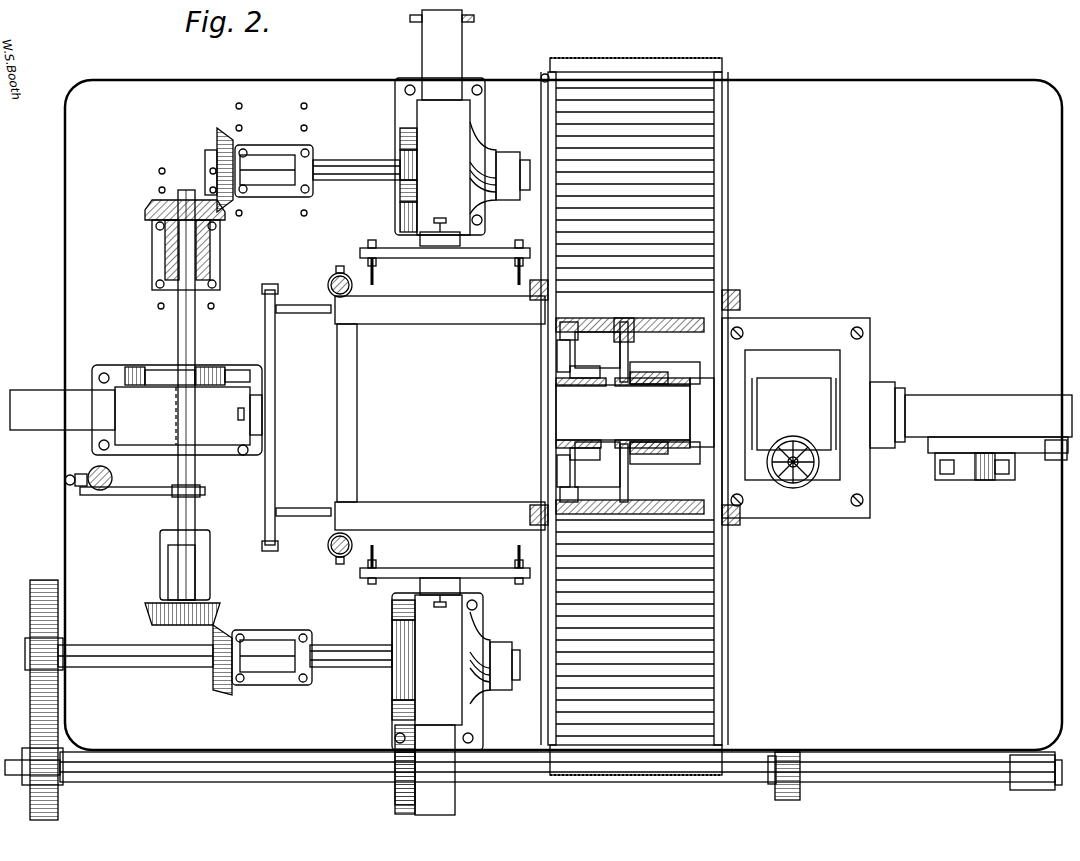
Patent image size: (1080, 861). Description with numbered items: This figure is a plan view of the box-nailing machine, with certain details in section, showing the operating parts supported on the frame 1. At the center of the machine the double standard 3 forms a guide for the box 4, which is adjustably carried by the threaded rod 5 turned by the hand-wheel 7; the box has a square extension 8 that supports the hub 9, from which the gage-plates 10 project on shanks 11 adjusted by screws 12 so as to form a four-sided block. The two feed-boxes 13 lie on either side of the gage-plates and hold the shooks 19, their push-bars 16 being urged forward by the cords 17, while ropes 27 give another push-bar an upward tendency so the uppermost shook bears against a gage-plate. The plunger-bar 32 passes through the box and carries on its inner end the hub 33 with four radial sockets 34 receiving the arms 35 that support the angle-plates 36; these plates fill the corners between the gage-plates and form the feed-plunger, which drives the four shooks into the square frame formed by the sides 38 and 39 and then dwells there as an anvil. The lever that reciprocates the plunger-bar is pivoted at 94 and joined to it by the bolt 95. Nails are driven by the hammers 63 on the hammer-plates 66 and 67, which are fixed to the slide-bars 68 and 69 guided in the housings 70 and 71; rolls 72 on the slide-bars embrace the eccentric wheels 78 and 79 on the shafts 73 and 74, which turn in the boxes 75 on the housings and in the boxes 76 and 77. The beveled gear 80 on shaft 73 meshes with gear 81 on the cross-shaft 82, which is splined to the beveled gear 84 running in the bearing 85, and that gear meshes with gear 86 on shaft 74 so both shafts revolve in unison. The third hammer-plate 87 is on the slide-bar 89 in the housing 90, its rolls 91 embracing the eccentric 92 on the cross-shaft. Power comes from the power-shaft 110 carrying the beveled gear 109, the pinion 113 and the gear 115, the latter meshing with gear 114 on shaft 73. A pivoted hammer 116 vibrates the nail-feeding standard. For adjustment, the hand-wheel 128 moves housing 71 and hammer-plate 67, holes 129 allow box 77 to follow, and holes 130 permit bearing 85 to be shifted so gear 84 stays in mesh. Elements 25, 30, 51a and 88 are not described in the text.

The frame 1 is at (826, 198).
The double standard 3 is at (805, 322).
The box 4 is at (782, 388).
The threaded rod 5 is at (797, 470).
The hand-wheel 7 is at (796, 440).
The extension 8 is at (612, 440).
The hub 9 is at (650, 376).
The gage-plates 10 is at (588, 368).
The shanks 11 is at (628, 350).
The screws 12 is at (634, 330).
The feed-boxes 13 is at (650, 60).
The push-bars 16 is at (722, 72).
The cords 17 is at (722, 216).
The shooks 19 is at (722, 146).
The frame rail 25 is at (722, 710).
The ropes 27 is at (548, 620).
The support block 30 is at (530, 290).
The plunger-bar 32 is at (938, 400).
The hub 33 is at (556, 392).
The radial sockets 34 is at (570, 378).
The arms 35 is at (560, 360).
The angle-plates 36 is at (562, 326).
The side 38 is at (440, 312).
The side 39 is at (430, 518).
The roller 51a is at (114, 478).
The hammers 63 is at (375, 275).
The hammer-plate 66 is at (430, 568).
The hammer-plate 67 is at (465, 258).
The slide-bar 68 is at (455, 800).
The slide-bar 69 is at (445, 55).
The housing 70 is at (437, 664).
The housing 71 is at (440, 162).
The rolls 72 is at (400, 118).
The shaft 73 is at (335, 648).
The shaft 74 is at (340, 158).
The boxes 75 is at (498, 195).
The box 76 is at (258, 640).
The box 77 is at (278, 196).
The eccentric wheel 78 is at (392, 684).
The eccentric wheel 79 is at (400, 194).
The beveled gear 80 is at (220, 692).
The beveled gear 81 is at (145, 615).
The cross-shaft 82 is at (195, 518).
The beveled gear 84 is at (150, 218).
The bearing 85 is at (162, 275).
The beveled gear 86 is at (217, 152).
The hammer-plate 87 is at (275, 348).
The bearing housing 88 is at (175, 568).
The slide-bar 89 is at (34, 430).
The housing 90 is at (177, 410).
The rolls 91 is at (134, 368).
The eccentric 92 is at (162, 370).
The pivot 94 is at (975, 470).
The bolt 95 is at (1052, 462).
The beveled gear 109 is at (795, 798).
The power-shaft 110 is at (207, 782).
The pinion 113 is at (395, 790).
The gear 114 is at (35, 580).
The gear 115 is at (58, 805).
The hammer 116 is at (66, 484).
The hand-wheel 128 is at (476, 18).
The holes 129 is at (248, 106).
The holes 130 is at (160, 168).